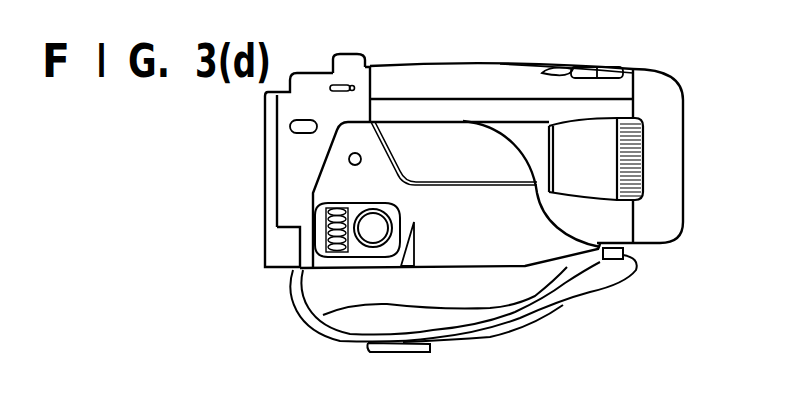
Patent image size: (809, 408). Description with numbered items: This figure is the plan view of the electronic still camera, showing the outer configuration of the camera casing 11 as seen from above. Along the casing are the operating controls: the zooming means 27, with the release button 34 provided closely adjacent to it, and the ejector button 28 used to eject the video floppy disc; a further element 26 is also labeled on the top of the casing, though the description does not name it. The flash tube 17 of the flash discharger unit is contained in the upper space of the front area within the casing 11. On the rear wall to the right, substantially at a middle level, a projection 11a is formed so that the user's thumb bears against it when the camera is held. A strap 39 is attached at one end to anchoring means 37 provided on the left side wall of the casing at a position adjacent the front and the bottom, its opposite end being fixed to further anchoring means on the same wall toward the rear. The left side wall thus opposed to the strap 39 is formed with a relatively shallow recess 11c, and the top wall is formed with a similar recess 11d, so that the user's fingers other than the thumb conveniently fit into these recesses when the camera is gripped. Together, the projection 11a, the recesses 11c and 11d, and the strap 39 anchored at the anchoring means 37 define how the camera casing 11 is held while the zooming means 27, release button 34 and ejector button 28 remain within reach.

The camera casing 11 is at (502, 82).
The projection 11a is at (278, 247).
The recess 11c is at (490, 222).
The recess 11d is at (440, 147).
The flash tube 17 is at (643, 137).
The switch on top surface 26 is at (600, 70).
The zooming means 27 is at (333, 222).
The ejector button 28 is at (347, 55).
The release button 34 is at (372, 232).
The anchoring means 37 is at (632, 250).
The strap 39 is at (434, 320).